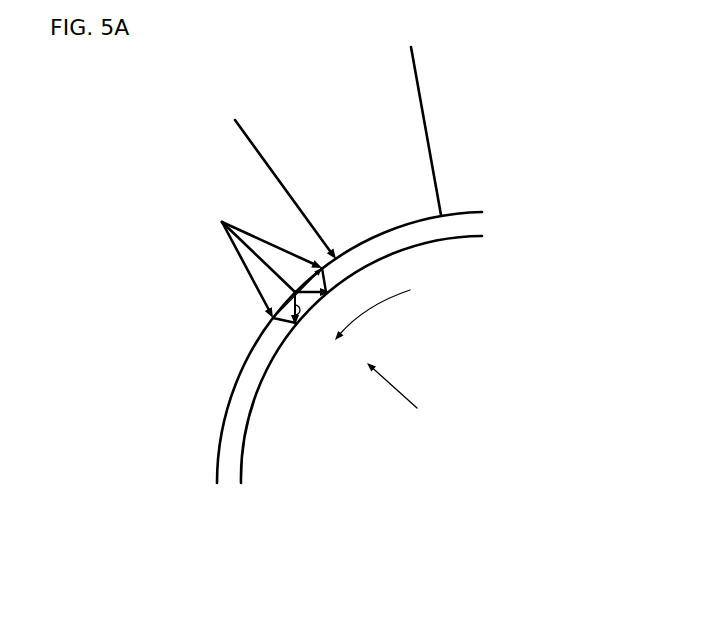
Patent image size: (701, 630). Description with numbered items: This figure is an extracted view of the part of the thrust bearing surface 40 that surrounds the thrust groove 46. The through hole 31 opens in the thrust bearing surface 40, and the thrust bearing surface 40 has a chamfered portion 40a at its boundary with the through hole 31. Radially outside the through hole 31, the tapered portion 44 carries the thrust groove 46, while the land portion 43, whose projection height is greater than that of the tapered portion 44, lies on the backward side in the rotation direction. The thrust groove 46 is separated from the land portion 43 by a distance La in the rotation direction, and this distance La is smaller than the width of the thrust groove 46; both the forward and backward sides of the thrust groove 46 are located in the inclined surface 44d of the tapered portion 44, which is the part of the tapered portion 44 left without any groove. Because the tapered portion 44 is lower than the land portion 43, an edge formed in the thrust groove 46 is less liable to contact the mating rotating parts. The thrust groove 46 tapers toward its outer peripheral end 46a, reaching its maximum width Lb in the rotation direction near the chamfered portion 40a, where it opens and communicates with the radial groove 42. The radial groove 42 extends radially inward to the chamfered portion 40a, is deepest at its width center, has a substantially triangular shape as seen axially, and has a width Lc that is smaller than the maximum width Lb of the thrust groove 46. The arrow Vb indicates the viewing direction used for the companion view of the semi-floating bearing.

The thrust bearing surface 40 is at (352, 97).
The chamfered portion 40a is at (472, 225).
The through hole 31 is at (470, 238).
The land portion 43 is at (320, 128).
The tapered portion 44 is at (202, 182).
The inclined surface 44d is at (262, 213).
The outer peripheral end 46a is at (222, 222).
The thrust groove 46 is at (250, 271).
The radial groove 42 is at (272, 320).
The distance La is at (333, 259).
The maximum width Lb is at (283, 298).
The width Lc is at (300, 326).
The arrow Vb is at (398, 385).